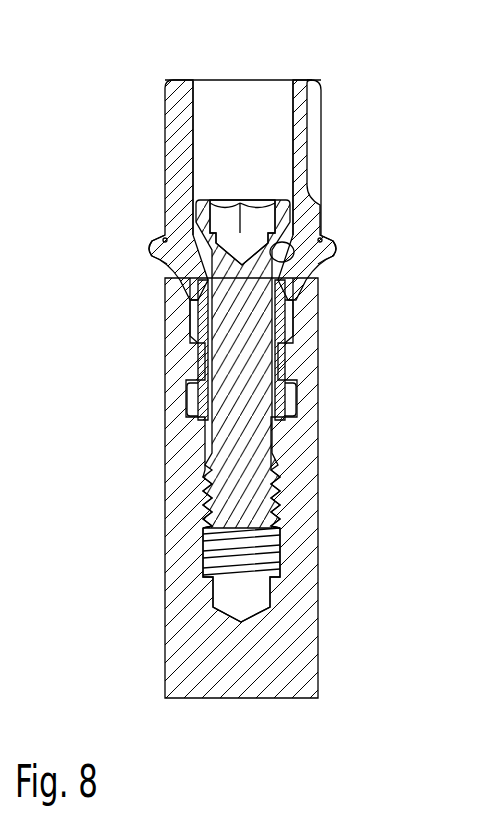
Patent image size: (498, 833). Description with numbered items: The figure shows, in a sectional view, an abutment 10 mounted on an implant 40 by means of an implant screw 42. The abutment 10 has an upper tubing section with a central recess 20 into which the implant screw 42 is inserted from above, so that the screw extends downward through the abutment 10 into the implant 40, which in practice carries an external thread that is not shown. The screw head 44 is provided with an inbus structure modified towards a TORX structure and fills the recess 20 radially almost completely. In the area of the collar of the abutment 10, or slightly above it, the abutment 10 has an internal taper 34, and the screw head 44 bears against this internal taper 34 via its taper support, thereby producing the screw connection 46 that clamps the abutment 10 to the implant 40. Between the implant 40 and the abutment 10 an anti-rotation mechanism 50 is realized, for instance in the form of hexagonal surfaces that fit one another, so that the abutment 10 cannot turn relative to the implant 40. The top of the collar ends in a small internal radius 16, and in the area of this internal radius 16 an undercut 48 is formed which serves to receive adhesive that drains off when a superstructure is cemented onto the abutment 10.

The abutment 10 is at (239, 353).
The internal radius 16 is at (248, 154).
The central recess 20 is at (249, 103).
The internal taper 34 is at (288, 262).
The implant 40 is at (178, 657).
The implant screw 42 is at (235, 410).
The screw head 44 is at (203, 218).
The screw connection 46 is at (275, 562).
The undercut 48 is at (158, 240).
The anti-rotation mechanism 50 is at (283, 357).